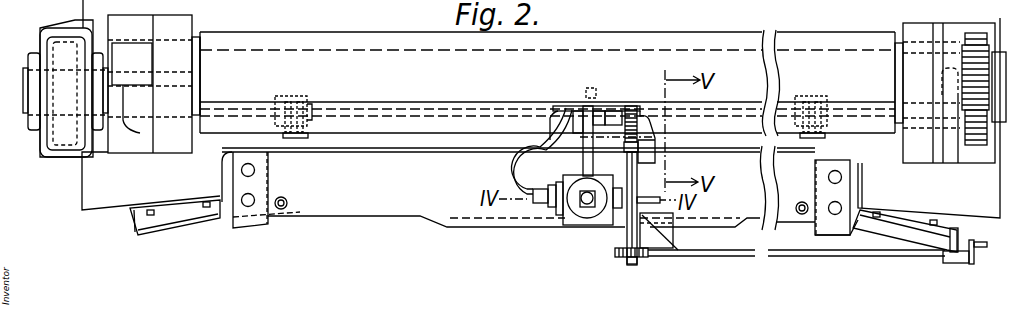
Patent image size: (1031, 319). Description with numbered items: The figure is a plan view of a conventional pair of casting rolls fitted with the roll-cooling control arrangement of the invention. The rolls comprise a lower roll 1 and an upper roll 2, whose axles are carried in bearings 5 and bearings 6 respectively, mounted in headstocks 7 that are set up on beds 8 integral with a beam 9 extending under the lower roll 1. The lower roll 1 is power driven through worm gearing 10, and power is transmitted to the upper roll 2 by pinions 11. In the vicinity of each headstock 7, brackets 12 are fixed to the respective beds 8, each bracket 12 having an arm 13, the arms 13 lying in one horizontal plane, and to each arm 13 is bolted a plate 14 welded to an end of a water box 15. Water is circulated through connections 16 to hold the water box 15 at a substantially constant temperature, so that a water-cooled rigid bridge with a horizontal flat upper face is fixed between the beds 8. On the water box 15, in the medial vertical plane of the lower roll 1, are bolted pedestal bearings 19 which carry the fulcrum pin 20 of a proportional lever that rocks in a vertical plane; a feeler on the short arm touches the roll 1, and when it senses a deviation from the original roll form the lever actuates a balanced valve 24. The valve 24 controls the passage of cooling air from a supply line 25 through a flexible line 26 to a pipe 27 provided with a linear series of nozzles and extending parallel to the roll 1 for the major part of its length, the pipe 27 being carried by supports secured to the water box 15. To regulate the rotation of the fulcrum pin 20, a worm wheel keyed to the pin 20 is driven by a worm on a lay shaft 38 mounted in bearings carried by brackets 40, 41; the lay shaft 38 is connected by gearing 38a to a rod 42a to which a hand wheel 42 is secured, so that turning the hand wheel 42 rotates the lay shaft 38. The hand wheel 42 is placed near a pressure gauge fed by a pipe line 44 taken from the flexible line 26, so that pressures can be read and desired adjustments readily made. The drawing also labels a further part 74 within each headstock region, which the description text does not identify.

The lower roll 1 is at (222, 132).
The upper roll 2 is at (287, 33).
The bearings 5 is at (898, 150).
The bearings 6 is at (201, 40).
The headstocks 7 is at (138, 128).
The beds 8 is at (159, 198).
The beam 9 is at (392, 140).
The worm gearing 10 is at (67, 123).
The pinions 11 is at (972, 33).
The brackets 12 is at (183, 230).
The arm 13 is at (232, 226).
The plate 14 is at (268, 225).
The water box 15 is at (422, 202).
The connections 16 is at (287, 212).
The pedestal bearings 19 is at (580, 111).
The fulcrum pin 20 is at (627, 106).
The balanced valve 24 is at (591, 227).
The supply line 25 is at (662, 205).
The flexible line 26 is at (505, 171).
The pipe 27 is at (468, 113).
The lay shaft 38 is at (626, 227).
The gearing 38a is at (626, 258).
The bracket 40 is at (664, 252).
The bracket 41 is at (656, 162).
The hand wheel 42 is at (970, 258).
The rod 42a is at (796, 270).
The pipe line 44 is at (839, 9).
The bearing insert 74 is at (312, 120).